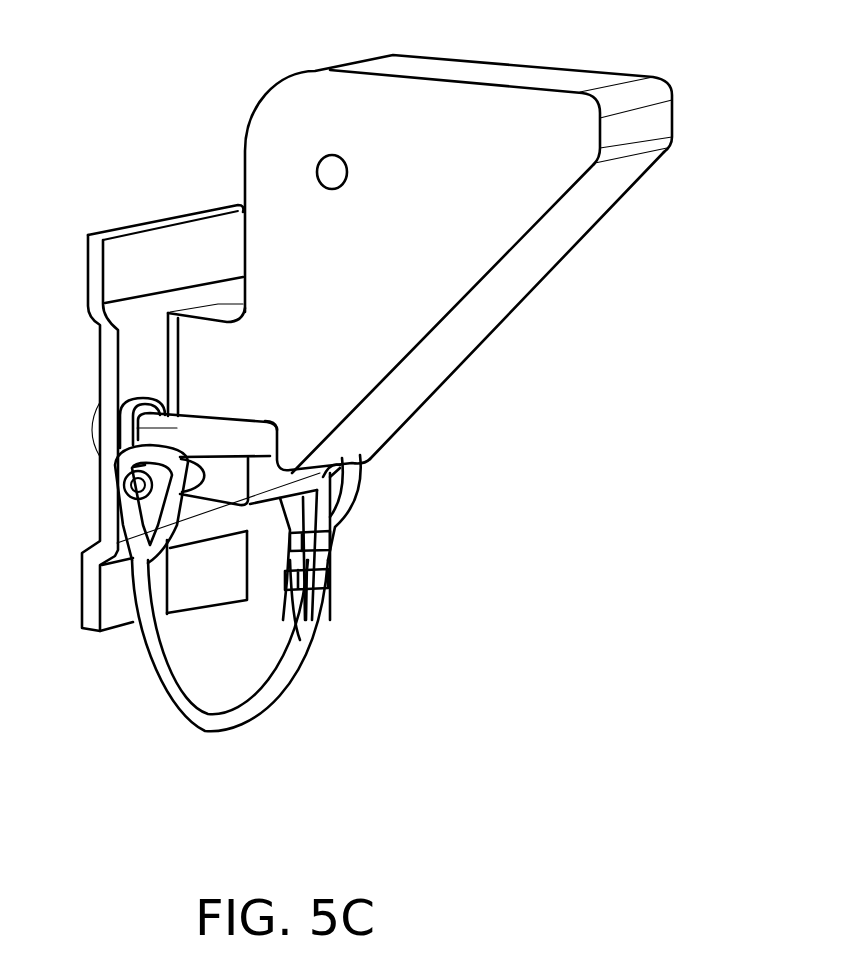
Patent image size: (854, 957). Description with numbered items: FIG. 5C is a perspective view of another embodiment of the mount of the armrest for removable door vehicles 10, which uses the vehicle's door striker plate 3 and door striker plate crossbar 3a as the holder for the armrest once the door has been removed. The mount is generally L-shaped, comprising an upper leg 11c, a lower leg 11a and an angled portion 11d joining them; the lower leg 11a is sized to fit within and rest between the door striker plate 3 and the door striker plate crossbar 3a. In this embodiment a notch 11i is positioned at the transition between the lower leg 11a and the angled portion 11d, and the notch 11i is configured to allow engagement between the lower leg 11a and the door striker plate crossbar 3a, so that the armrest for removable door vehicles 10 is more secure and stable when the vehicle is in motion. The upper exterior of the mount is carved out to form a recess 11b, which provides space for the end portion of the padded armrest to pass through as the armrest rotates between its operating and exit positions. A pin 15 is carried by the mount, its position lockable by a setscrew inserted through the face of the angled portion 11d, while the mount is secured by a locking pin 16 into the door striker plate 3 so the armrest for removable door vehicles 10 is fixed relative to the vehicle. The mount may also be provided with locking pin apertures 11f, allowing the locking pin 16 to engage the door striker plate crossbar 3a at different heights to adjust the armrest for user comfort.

The door striker plate 3 is at (195, 240).
The door striker plate crossbar 3a is at (122, 440).
The armrest for removable door vehicles 10 is at (528, 464).
The lower leg 11a is at (293, 487).
The recess 11b is at (205, 312).
The upper leg 11c is at (455, 71).
The angled portion 11d is at (510, 283).
The locking pin apertures 11f is at (190, 487).
The notch 11i is at (280, 413).
The pin 15 is at (323, 167).
The locking pin 16 is at (293, 682).